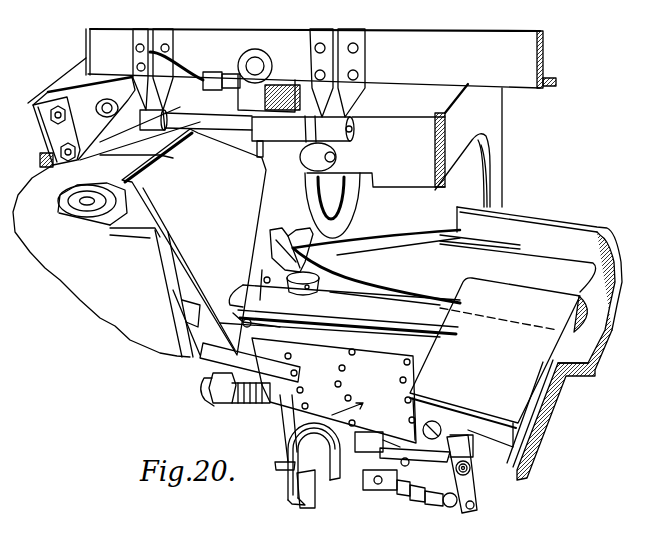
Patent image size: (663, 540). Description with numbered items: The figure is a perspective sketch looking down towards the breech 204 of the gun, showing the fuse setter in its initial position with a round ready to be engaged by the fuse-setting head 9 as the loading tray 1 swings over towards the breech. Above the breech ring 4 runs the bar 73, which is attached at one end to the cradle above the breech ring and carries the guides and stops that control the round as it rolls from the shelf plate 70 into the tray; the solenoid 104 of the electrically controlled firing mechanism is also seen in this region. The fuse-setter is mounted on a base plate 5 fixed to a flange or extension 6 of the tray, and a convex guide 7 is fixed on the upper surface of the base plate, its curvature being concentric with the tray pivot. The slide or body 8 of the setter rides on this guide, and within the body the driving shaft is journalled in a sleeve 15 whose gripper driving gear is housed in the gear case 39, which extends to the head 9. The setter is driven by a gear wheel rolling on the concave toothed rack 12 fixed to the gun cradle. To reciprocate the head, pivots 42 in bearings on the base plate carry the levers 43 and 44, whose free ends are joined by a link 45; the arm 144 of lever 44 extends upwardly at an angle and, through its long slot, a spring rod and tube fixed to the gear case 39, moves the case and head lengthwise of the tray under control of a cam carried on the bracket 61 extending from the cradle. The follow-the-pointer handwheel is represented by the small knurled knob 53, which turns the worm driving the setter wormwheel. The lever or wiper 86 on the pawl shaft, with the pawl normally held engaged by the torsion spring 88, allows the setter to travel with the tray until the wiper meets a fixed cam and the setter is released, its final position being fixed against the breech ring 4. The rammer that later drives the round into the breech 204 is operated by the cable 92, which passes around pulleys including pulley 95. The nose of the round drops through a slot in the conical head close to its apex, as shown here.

The loading tray 1 is at (600, 245).
The breech ring 4 is at (500, 137).
The base plate 5 is at (525, 432).
The flange or extension of the tray 6 is at (550, 415).
The convex guide 7 is at (357, 287).
The slide or body of the fuse-setter 8 is at (295, 427).
The fuse-setting head 9 is at (277, 260).
The toothed rack 12 is at (187, 318).
The sleeve 15 is at (257, 352).
The gear case 39 is at (267, 277).
The pivots of levers 42 is at (469, 471).
The lever 43 is at (370, 467).
The lever 44 is at (475, 502).
The link 45 is at (416, 498).
The knurled knob 53 is at (395, 447).
The bracket 61 is at (480, 427).
The plate of the round shelf 70 is at (523, 392).
The bar 73 is at (528, 48).
The lever or wiper 86 is at (200, 390).
The torsion spring 88 is at (243, 403).
The cable 92 is at (338, 270).
The pulley 95 is at (313, 292).
The solenoid 104 is at (285, 57).
The arm of lever 44 144 is at (500, 457).
The breech 204 is at (336, 182).